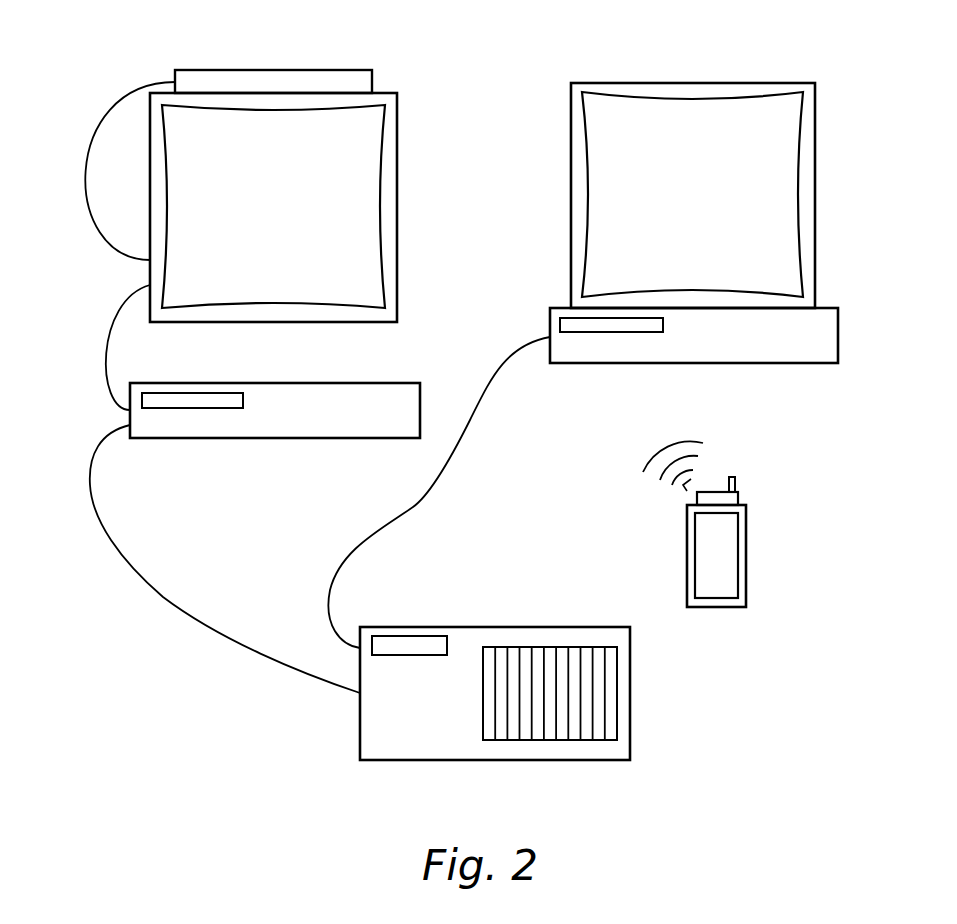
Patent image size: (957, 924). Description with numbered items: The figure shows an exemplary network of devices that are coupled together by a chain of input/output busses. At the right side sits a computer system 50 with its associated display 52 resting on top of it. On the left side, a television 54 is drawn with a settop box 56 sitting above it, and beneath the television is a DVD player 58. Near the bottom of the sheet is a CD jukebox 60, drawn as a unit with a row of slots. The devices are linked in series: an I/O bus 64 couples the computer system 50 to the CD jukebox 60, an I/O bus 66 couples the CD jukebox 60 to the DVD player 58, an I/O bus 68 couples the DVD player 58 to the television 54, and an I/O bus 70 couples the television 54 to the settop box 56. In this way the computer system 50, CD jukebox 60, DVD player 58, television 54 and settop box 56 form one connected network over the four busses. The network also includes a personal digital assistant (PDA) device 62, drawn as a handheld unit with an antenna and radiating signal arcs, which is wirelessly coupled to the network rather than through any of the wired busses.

The computer system 50 is at (838, 333).
The display 52 is at (815, 200).
The television 54 is at (350, 322).
The settop box 56 is at (192, 70).
The DVD player 58 is at (258, 383).
The CD jukebox 60 is at (490, 760).
The personal digital assistant (PDA) device 62 is at (746, 553).
The input/output (I/O) bus 64 is at (437, 480).
The input/output (I/O) bus 66 is at (163, 597).
The input/output (I/O) bus 68 is at (105, 350).
The input/output (I/O) bus 70 is at (85, 175).